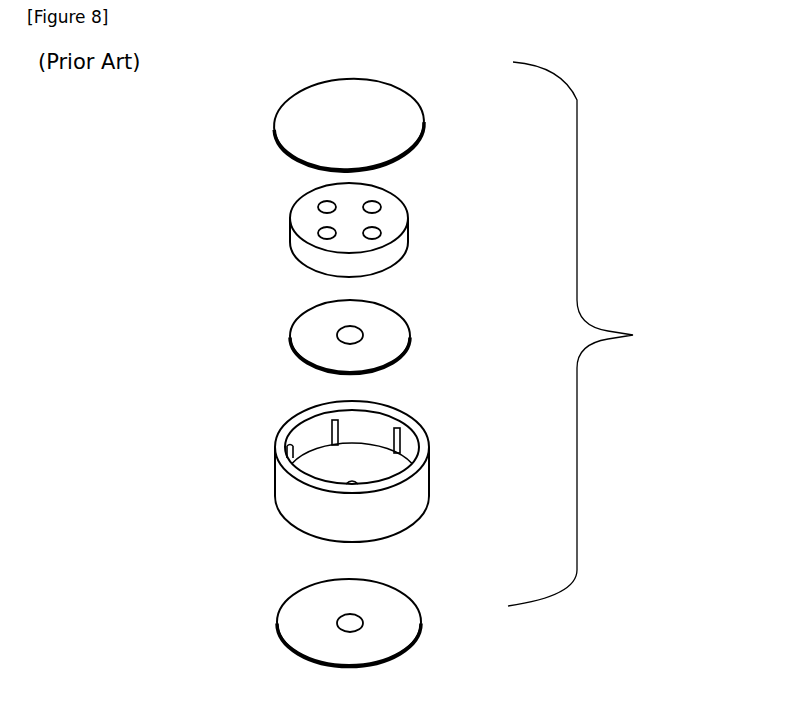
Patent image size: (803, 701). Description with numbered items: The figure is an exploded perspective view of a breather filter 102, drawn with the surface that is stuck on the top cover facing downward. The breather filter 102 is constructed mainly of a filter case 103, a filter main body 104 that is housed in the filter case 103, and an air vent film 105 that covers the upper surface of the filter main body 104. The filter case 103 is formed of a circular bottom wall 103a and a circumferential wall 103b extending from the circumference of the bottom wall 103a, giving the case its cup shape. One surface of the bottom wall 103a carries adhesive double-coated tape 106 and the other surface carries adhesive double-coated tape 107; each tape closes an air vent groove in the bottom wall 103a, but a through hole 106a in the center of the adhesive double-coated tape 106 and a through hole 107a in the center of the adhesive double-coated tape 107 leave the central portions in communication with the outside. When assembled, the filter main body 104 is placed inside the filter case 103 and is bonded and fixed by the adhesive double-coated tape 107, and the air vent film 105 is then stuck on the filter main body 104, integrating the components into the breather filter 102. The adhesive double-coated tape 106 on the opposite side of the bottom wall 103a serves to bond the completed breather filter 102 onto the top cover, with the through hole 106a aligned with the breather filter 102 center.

The breather filter 102 is at (633, 335).
The filter case 103 is at (339, 463).
The bottom wall 103a is at (348, 457).
The circumferential wall 103b is at (286, 489).
The filter main body 104 is at (398, 222).
The air vent film 105 is at (415, 137).
The adhesive double-coated tape 106 is at (406, 605).
The through hole 106a is at (350, 624).
The adhesive double-coated tape 107 is at (406, 314).
The through hole 107a is at (350, 337).